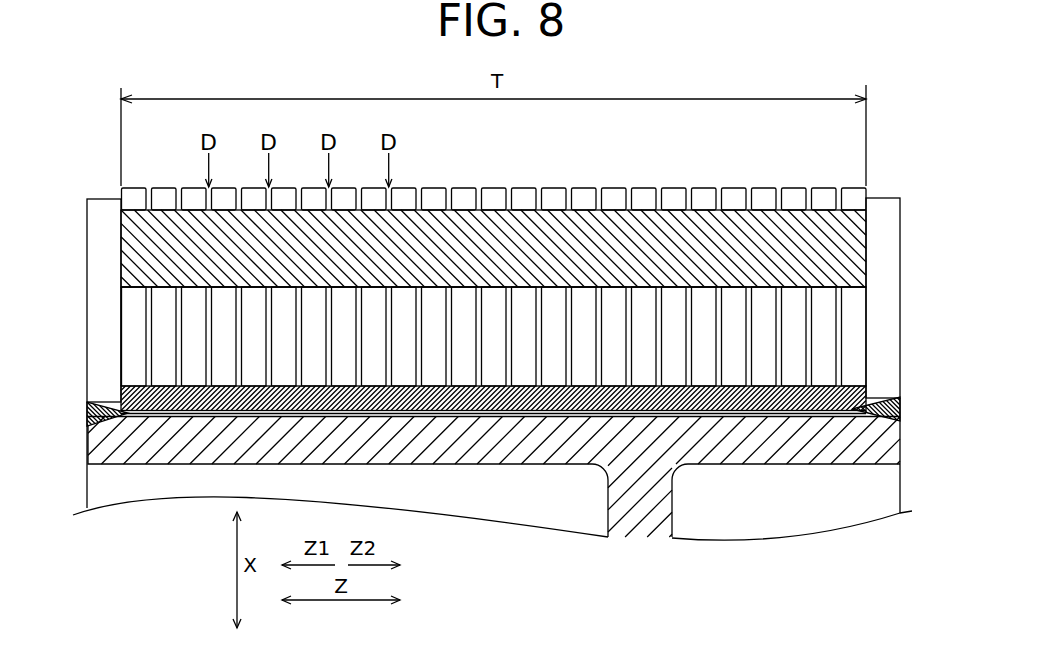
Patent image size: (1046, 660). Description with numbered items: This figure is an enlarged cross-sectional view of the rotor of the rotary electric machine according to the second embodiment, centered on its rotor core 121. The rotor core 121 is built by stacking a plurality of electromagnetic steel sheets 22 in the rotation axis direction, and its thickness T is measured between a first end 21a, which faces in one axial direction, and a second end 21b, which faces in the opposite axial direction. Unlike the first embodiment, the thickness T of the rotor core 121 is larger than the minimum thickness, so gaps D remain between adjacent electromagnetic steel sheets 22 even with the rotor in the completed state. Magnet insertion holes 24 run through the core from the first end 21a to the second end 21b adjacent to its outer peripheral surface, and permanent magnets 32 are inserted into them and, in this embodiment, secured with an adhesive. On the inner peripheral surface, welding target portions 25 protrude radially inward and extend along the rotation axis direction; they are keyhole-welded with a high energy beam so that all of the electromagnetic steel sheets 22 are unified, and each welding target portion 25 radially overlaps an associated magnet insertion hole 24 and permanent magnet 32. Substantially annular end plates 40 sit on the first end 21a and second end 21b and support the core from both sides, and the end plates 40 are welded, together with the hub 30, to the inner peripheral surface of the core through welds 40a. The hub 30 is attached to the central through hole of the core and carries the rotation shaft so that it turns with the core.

The rotor core 121 is at (723, 161).
The electromagnetic steel sheets 22 is at (194, 187).
The permanent magnets 32 is at (843, 228).
The magnet insertion holes 24 is at (843, 283).
The second end 21b is at (866, 340).
The first end 21a is at (121, 348).
The welding target portions 25 is at (768, 417).
The end plates 40 is at (103, 212).
The welds 40a is at (107, 422).
The hub 30 is at (545, 442).